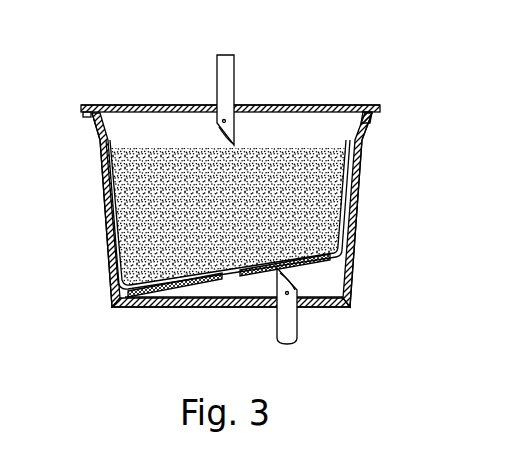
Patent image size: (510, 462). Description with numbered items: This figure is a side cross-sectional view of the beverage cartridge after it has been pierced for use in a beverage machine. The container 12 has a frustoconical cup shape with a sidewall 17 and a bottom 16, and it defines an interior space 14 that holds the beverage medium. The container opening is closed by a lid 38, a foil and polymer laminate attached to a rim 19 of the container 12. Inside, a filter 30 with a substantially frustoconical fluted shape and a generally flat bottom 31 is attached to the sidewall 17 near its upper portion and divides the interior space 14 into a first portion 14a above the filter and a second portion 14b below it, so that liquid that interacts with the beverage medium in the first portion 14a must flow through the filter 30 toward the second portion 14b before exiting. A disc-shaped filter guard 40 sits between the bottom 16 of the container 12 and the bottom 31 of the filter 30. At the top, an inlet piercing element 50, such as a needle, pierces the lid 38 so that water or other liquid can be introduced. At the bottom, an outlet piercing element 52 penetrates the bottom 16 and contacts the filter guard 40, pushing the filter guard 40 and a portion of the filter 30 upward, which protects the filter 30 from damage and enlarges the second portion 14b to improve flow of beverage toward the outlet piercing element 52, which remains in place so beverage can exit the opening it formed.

The container 12 is at (117, 303).
The interior space 14 is at (128, 132).
The first portion of the interior space 14a is at (312, 118).
The second portion of the interior space 14b is at (352, 262).
The bottom of the container 16 is at (192, 304).
The sidewall 17 is at (349, 190).
The rim 19 is at (374, 115).
The filter 30 is at (122, 246).
The bottom of the filter 31 is at (218, 283).
The lid 38 is at (137, 105).
The filter guard 40 is at (332, 270).
The inlet piercing element 50 is at (234, 85).
The outlet piercing element 52 is at (298, 318).